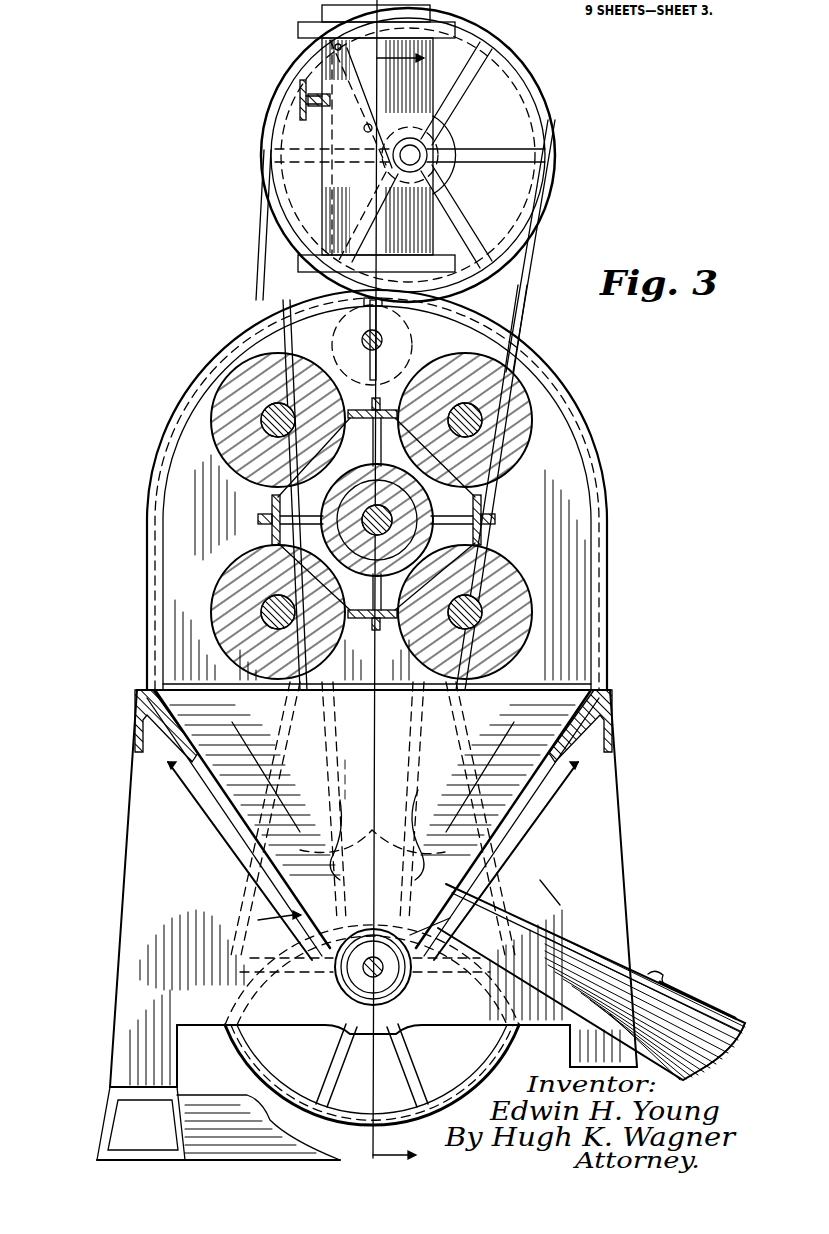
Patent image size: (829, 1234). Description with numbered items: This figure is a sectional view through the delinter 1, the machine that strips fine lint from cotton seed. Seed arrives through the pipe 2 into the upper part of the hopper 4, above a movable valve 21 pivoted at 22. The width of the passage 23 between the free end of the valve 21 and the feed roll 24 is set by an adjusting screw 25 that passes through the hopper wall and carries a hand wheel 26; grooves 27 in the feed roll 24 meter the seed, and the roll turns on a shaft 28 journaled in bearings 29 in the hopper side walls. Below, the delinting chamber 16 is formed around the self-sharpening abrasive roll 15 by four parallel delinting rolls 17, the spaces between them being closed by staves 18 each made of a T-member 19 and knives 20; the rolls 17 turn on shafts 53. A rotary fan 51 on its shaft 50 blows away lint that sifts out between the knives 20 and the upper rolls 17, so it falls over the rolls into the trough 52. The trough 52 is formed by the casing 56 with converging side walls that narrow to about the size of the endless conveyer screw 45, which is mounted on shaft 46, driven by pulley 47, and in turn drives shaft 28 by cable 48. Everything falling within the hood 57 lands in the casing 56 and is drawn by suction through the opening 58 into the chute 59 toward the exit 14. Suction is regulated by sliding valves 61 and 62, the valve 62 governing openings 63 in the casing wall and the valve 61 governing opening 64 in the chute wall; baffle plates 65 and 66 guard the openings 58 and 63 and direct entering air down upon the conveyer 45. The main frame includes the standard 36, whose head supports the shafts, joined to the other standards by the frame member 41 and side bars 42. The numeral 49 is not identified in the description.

The delinter 1 is at (222, 362).
The pipe 2 is at (518, 23).
The hopper 4 is at (426, 95).
The exit 14 is at (700, 1068).
The abrasive roll 15 is at (428, 515).
The delinting chamber 16 is at (376, 514).
The delinting rolls 17 is at (528, 410).
The staves 18 is at (376, 514).
The T-member 19 is at (384, 410).
The knives 20 is at (372, 403).
The movable valve 21 is at (364, 129).
The pivot 22 is at (335, 46).
The passage 23 is at (204, 736).
The feed roll 24 is at (470, 158).
The adjusting screw 25 is at (330, 120).
The hand wheel 26 is at (300, 88).
The grooves 27 is at (430, 172).
The shaft 28 is at (421, 156).
The bearings 29 is at (452, 207).
The standard 36 is at (630, 847).
The frame member 41 is at (207, 1095).
The side bars 42 is at (134, 740).
The endless conveyer screw 45 is at (380, 969).
The shaft 46 is at (345, 975).
The pulley 47 is at (390, 1108).
The cable 48 is at (531, 318).
The bracket 49 is at (558, 874).
The shaft 50 is at (362, 341).
The rotary fan 51 is at (384, 362).
The trough 52 is at (339, 768).
The shafts 53 is at (275, 405).
The casing 56 is at (230, 790).
The hood 57 is at (599, 466).
The opening 58 is at (443, 923).
The chute 59 is at (580, 948).
The sliding valve 61 is at (690, 990).
The sliding valve 62 is at (230, 908).
The openings 63 is at (333, 870).
The opening 64 is at (705, 998).
The baffle plate 65 is at (418, 790).
The baffle plate 66 is at (340, 800).